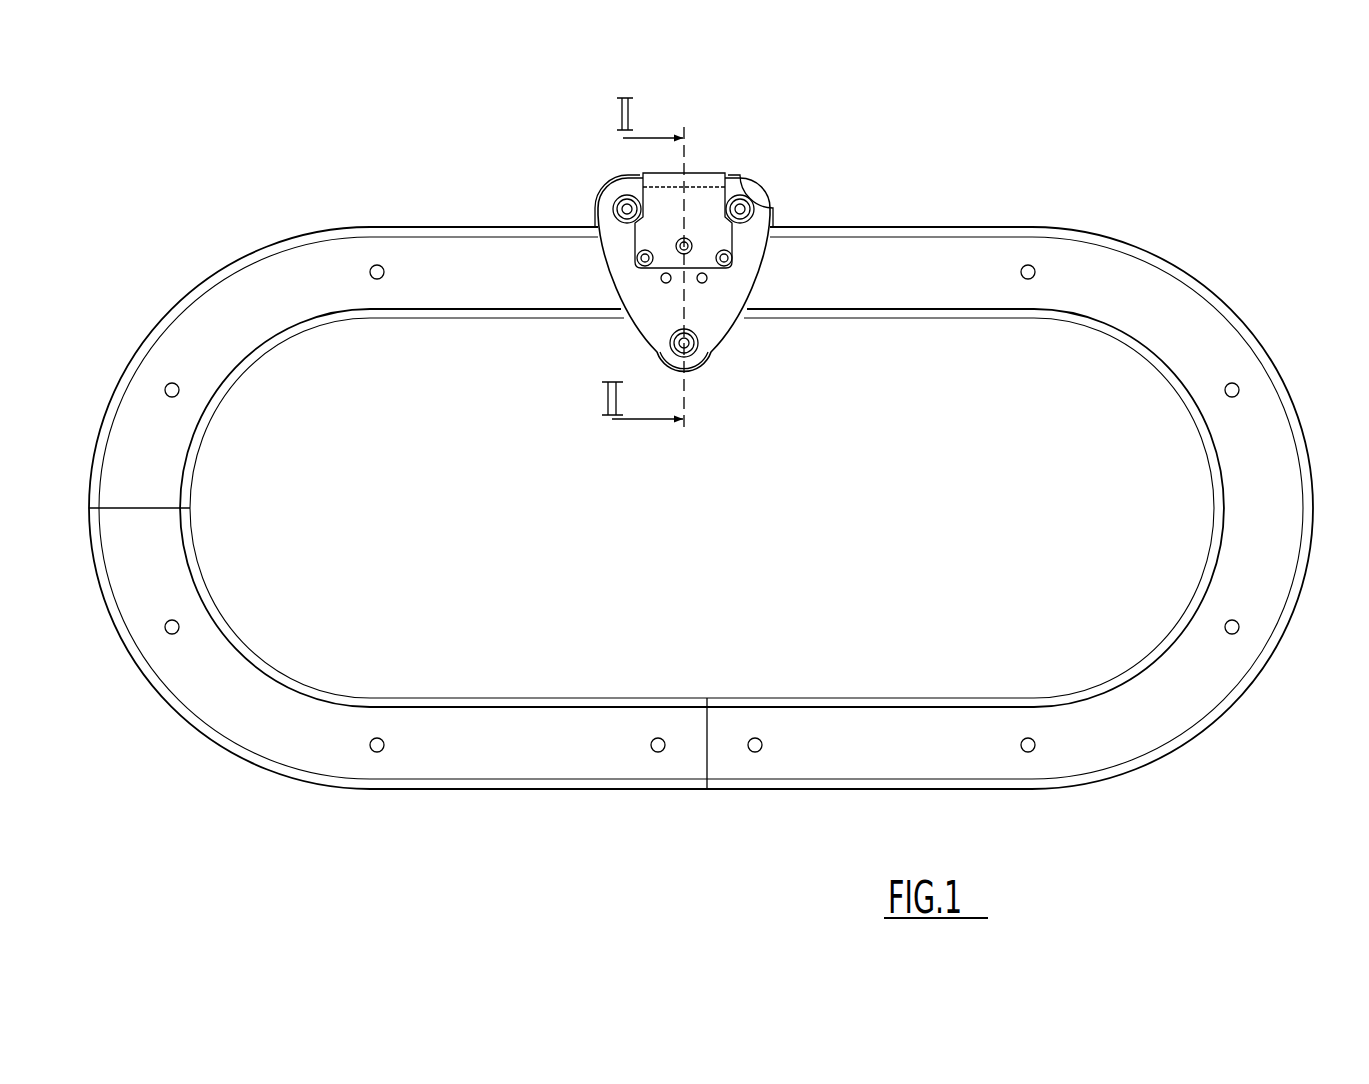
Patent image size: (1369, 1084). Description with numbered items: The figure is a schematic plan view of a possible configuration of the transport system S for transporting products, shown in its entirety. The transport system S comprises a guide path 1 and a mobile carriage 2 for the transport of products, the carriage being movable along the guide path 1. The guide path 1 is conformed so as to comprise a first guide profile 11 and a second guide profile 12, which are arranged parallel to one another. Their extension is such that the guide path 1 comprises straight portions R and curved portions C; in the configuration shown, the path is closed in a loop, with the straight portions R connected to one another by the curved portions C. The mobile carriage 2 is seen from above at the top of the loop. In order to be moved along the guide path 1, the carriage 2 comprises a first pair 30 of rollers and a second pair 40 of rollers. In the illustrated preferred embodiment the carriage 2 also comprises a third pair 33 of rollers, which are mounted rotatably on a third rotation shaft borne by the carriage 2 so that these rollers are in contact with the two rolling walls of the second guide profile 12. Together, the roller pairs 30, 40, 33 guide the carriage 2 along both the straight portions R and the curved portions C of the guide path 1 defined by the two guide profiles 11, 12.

The guide path 1 is at (701, 523).
The first guide profile 11 is at (787, 316).
The second guide profile 12 is at (835, 225).
The mobile carriage 2 is at (646, 267).
The first pair of rollers 30 is at (714, 369).
The third pair of rollers 33 is at (600, 176).
The second pair of rollers 40 is at (758, 177).
The straight portion R is at (520, 330).
The curved portion C is at (218, 502).
The transport system S is at (701, 500).